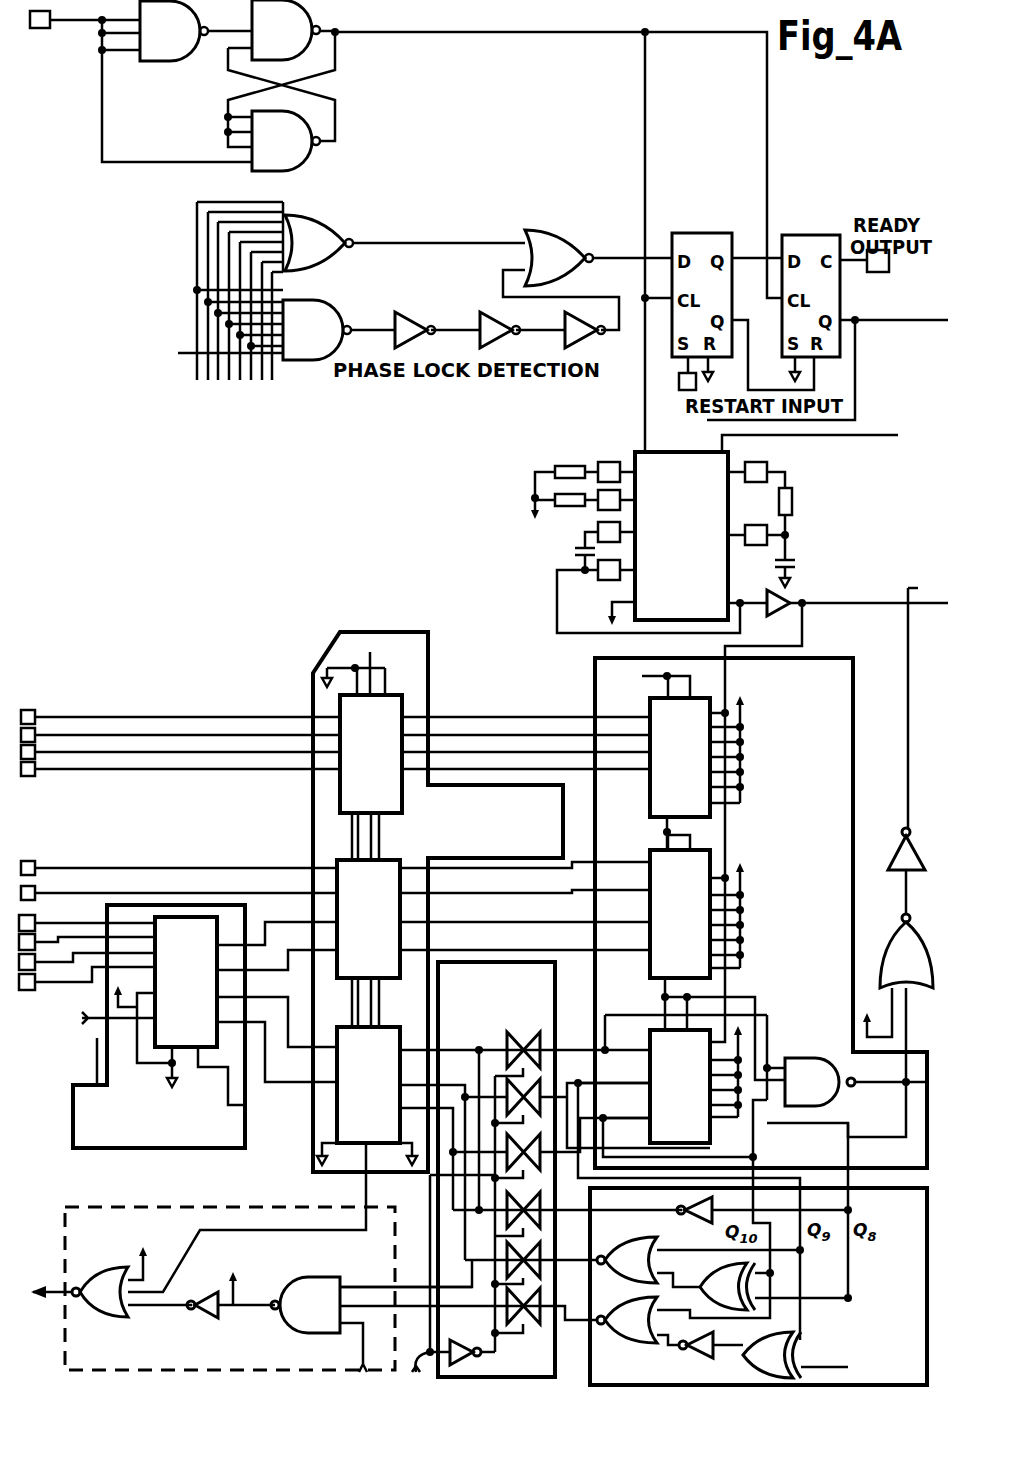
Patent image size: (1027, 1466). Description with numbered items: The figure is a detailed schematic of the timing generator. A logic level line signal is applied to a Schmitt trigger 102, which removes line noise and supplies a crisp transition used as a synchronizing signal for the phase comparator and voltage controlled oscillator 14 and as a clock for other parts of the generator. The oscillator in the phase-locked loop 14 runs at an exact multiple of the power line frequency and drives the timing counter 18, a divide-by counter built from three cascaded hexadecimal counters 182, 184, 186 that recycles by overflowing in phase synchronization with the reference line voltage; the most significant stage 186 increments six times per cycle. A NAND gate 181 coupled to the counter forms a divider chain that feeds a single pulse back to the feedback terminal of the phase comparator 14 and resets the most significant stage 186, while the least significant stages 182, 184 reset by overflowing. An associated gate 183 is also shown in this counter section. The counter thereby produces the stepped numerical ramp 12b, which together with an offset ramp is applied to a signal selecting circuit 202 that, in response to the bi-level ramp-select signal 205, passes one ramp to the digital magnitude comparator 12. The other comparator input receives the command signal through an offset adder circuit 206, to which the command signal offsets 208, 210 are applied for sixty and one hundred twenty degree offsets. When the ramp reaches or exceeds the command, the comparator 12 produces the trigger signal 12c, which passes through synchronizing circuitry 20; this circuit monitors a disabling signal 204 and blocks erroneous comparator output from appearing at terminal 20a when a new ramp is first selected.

The Schmitt trigger 102 is at (100, 94).
The phase comparator and voltage controlled oscillator 14 is at (692, 533).
The digital magnitude comparator 12 is at (412, 663).
The second signal 12b is at (495, 716).
The trigger signal 12c is at (368, 1222).
The timing counter 18 is at (797, 700).
The hexadecimal counter 182 is at (662, 800).
The hexadecimal counter 184 is at (657, 975).
The hexadecimal counter 186 is at (697, 1132).
The NAND gate 181 is at (822, 1057).
The NOR gate and inverter 183 is at (897, 945).
The signal selecting circuit 202 is at (572, 1169).
The disabling signal 204 is at (360, 1342).
The ramp-select signal 205 is at (418, 1348).
The offset adder circuit 206 is at (178, 1042).
The command signal offset 208 is at (90, 1020).
The command signal offset 210 is at (97, 1038).
The synchronizing circuitry 20 is at (243, 1264).
The terminal 20a is at (57, 1286).